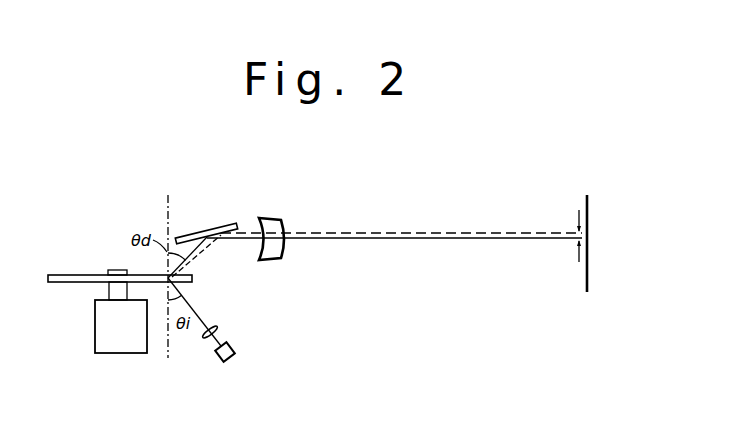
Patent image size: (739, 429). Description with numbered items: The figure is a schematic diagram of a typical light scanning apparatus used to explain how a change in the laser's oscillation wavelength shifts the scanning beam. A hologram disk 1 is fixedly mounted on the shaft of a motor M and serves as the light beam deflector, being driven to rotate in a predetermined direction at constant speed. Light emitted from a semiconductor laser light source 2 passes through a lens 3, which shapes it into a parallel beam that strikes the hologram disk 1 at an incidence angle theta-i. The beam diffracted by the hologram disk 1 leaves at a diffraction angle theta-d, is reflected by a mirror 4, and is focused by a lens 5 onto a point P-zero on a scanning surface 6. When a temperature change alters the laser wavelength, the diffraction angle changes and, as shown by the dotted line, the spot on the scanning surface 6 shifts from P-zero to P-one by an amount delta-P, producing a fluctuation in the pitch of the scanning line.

The hologram disk 1 is at (80, 275).
The semiconductor laser light source 2 is at (220, 361).
The lens 3 is at (215, 328).
The mirror 4 is at (187, 236).
The lens 5 is at (283, 252).
The scanning surface 6 is at (588, 215).